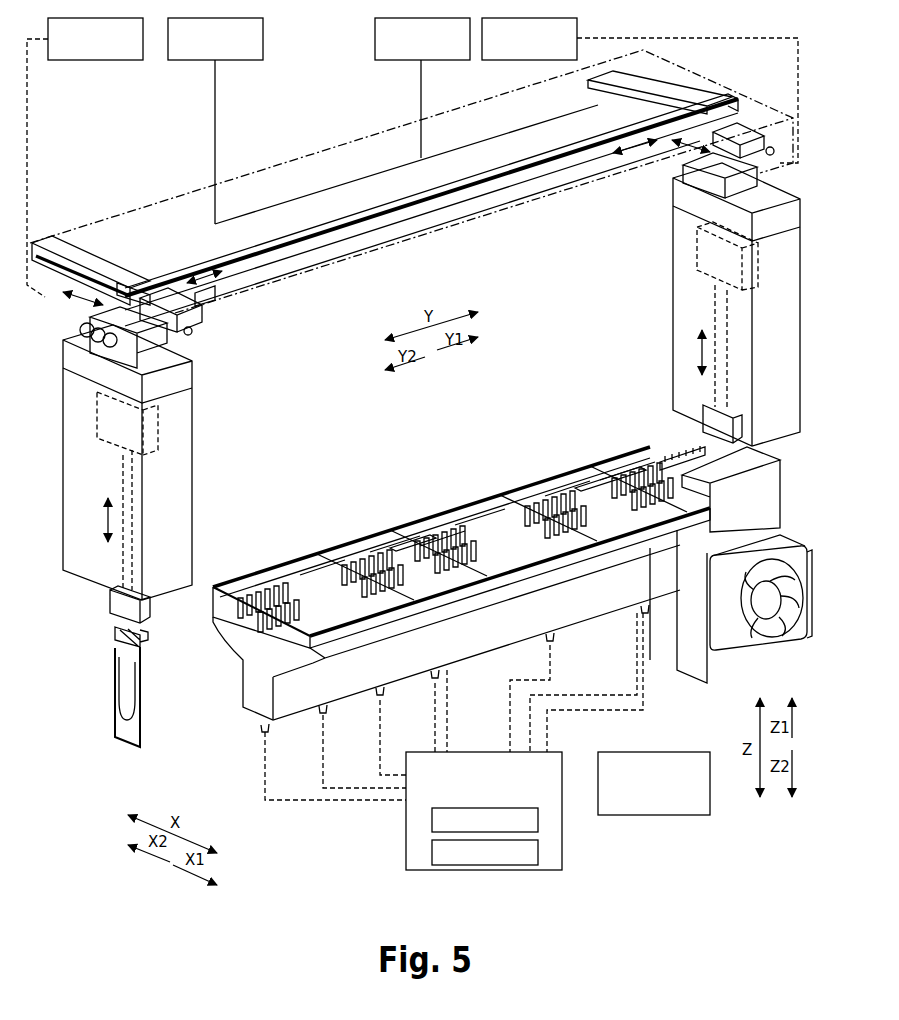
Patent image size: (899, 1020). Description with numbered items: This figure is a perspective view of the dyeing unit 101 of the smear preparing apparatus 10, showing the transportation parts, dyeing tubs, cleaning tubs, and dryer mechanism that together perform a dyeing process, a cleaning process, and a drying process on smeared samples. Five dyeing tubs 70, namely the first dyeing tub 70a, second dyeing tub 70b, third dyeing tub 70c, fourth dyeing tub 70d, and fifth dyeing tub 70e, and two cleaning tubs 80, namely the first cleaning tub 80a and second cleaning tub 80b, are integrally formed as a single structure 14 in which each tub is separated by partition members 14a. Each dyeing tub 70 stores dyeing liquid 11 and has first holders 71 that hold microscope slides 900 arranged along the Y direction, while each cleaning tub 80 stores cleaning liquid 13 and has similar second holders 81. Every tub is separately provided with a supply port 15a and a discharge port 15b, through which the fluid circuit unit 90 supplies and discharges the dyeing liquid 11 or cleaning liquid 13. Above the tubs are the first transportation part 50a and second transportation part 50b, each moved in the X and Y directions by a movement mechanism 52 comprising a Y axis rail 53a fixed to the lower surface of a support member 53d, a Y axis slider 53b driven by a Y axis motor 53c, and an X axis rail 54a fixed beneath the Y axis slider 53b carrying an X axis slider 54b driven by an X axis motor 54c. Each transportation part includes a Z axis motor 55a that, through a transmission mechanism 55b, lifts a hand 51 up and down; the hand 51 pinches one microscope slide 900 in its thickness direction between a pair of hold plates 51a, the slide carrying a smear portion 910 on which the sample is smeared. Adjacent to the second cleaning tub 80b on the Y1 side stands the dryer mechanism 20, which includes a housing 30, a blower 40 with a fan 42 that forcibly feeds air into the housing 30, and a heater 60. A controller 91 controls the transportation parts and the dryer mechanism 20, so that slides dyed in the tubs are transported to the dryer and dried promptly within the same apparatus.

The smear preparing apparatus 10 is at (333, 103).
The dyeing liquid 11 is at (432, 822).
The cleaning liquid 13 is at (432, 852).
The structure 14 is at (290, 668).
The partition members 14a is at (345, 622).
The supply port 15a is at (448, 673).
The discharge port 15b is at (263, 733).
The dryer mechanism 20 is at (688, 692).
The housing 30 is at (610, 477).
The blower 40 is at (787, 545).
The fan 42 is at (790, 650).
The first transportation part 50a is at (200, 423).
The second transportation part 50b is at (658, 313).
The hand 51 is at (123, 613).
The hold plates 51a is at (125, 642).
The movement mechanism 52 is at (413, 222).
The Y axis rail 53a is at (438, 203).
The Y axis slider 53b is at (213, 303).
The Y axis motor 53c is at (228, 61).
The support member 53d is at (287, 156).
The X axis rail 54a is at (187, 330).
The X axis slider 54b is at (120, 315).
The X axis motor 54c is at (112, 61).
The Z axis motor 55a is at (100, 415).
The transmission mechanism 55b is at (123, 466).
The heater 60 is at (753, 463).
The dyeing tubs 70 is at (444, 503).
The first dyeing tub 70a is at (247, 587).
The second dyeing tub 70b is at (317, 553).
The third dyeing tub 70c is at (370, 547).
The fourth dyeing tub 70d is at (465, 520).
The fifth dyeing tub 70e is at (533, 502).
The first holders 71 is at (283, 587).
The cleaning tubs 80 is at (504, 451).
The first cleaning tub 80a is at (405, 537).
The second cleaning tub 80b is at (600, 440).
The second holders 81 is at (428, 543).
The fluid circuit unit 90 is at (563, 838).
The controller 91 is at (667, 817).
The dyeing unit 101 is at (345, 825).
The microscope slide 900 is at (113, 668).
The smear portion 910 is at (128, 690).